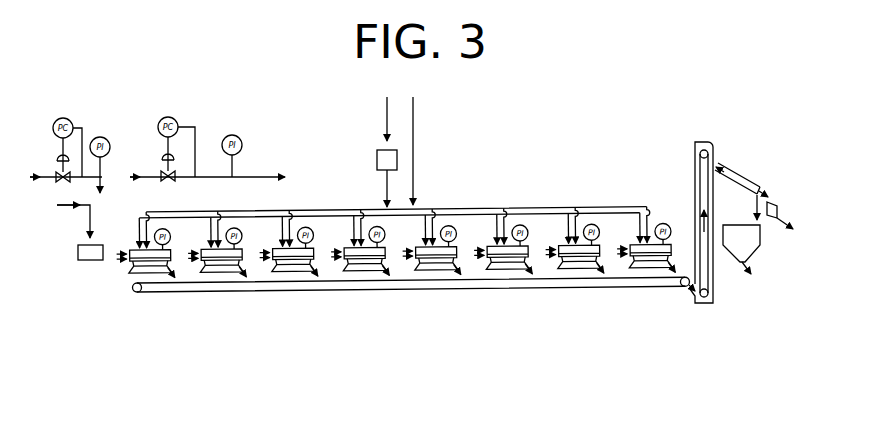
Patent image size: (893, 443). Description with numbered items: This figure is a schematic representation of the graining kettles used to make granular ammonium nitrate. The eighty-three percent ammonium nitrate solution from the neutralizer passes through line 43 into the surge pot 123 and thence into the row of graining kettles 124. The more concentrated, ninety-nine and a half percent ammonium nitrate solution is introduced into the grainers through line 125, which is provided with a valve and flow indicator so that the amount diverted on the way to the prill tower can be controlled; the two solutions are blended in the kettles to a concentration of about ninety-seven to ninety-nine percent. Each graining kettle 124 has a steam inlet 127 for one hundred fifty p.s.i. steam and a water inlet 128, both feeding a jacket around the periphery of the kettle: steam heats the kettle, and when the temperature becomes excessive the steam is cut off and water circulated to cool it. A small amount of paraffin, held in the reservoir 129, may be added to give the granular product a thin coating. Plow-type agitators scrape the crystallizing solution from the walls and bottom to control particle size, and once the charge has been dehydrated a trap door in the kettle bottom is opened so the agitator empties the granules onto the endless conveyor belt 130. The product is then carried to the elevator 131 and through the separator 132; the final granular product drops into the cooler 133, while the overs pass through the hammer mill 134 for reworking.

The line 43 is at (386, 112).
The surge pot 123 is at (377, 167).
The graining kettles 124 is at (128, 274).
The line 125 is at (414, 142).
The steam inlet 127 is at (101, 181).
The water inlet 128 is at (122, 262).
The reservoir 129 is at (78, 255).
The endless conveyor belt 130 is at (286, 292).
The elevator 131 is at (694, 178).
The separator 132 is at (752, 181).
The cooler 133 is at (750, 243).
The hammer mill 134 is at (774, 212).